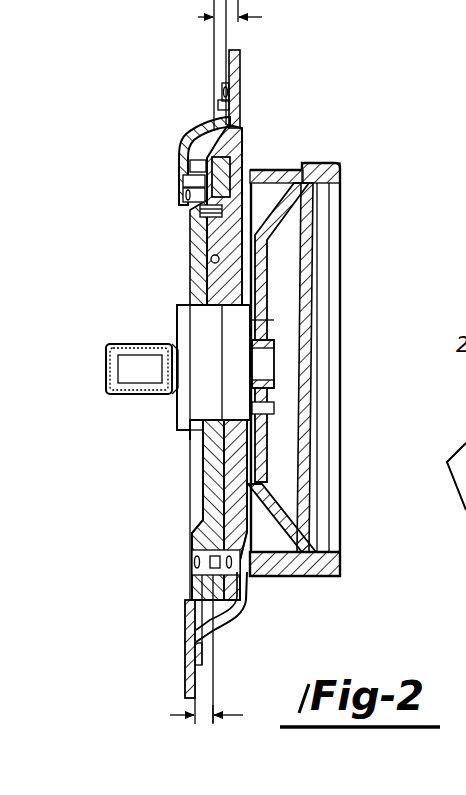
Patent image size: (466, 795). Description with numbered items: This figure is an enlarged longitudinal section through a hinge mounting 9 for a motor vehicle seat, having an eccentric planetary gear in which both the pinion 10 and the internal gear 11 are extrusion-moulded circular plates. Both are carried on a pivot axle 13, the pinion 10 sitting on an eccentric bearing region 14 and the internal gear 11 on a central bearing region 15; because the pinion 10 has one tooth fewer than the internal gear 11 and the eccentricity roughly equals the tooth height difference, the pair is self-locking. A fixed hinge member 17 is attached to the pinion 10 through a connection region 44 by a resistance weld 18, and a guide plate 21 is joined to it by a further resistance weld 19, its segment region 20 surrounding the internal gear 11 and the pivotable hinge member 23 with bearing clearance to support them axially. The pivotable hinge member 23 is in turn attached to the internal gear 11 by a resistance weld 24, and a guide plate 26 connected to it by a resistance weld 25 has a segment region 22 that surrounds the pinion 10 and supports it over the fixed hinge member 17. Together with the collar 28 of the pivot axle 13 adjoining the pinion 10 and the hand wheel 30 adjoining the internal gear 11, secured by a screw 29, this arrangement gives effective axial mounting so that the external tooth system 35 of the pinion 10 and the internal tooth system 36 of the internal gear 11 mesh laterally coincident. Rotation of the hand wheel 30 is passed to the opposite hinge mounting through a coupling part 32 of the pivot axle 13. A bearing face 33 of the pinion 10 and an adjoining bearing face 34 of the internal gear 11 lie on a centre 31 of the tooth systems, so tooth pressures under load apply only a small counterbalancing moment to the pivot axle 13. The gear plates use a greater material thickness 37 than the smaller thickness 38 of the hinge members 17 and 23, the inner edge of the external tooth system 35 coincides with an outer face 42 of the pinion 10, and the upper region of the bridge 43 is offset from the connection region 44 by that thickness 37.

The hinge mounting 9 is at (358, 218).
The pinion 10 is at (217, 472).
The internal gear 11 is at (250, 473).
The pivot axle 13 is at (200, 391).
The eccentric bearing region 14 is at (188, 435).
The central bearing region 15 is at (285, 375).
The fixed hinge member 17 is at (190, 588).
The resistance weld 18 is at (187, 562).
The resistance weld 19 is at (187, 653).
The segment region 20 is at (247, 590).
The guide plate 21 is at (237, 617).
The segment region 22 is at (182, 197).
The pivotable hinge member 23 is at (237, 92).
The resistance weld 24 is at (250, 165).
The resistance weld 25 is at (223, 100).
The guide plate 26 is at (210, 127).
The collar 28 is at (187, 412).
The screw 29 is at (315, 330).
The hand wheel 30 is at (341, 173).
The centre 31 is at (212, 257).
The coupling part 32 is at (120, 370).
The bearing face 33 is at (263, 413).
The bearing face 34 is at (190, 308).
The external tooth system 35 is at (200, 211).
The internal tooth system 36 is at (182, 204).
The thickness 37 is at (203, 714).
The thickness 38 is at (237, 7).
The outer face 42 is at (233, 158).
The bridge 43 is at (213, 288).
The connection region 44 is at (195, 160).